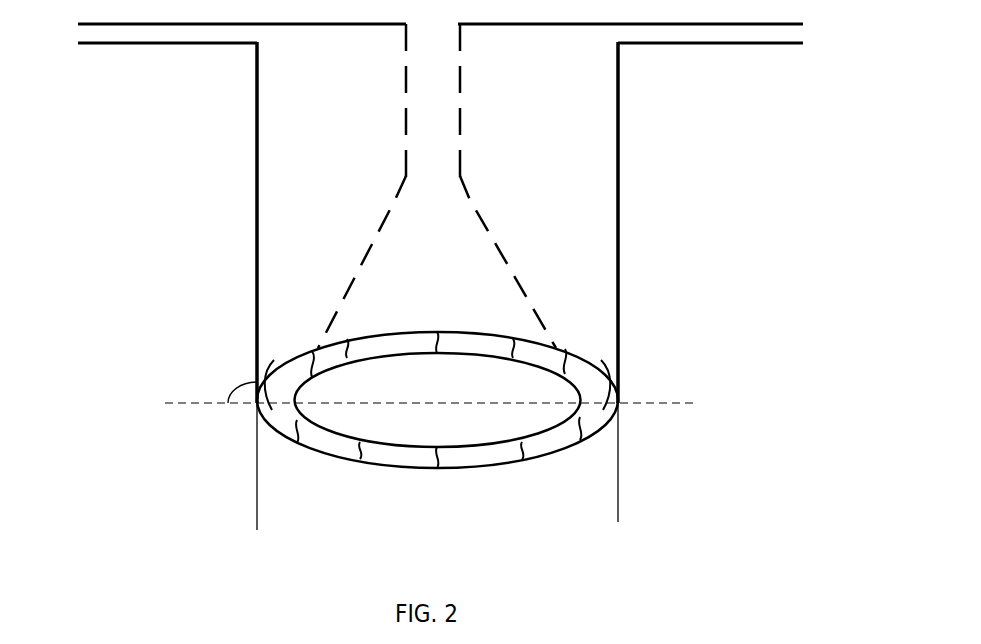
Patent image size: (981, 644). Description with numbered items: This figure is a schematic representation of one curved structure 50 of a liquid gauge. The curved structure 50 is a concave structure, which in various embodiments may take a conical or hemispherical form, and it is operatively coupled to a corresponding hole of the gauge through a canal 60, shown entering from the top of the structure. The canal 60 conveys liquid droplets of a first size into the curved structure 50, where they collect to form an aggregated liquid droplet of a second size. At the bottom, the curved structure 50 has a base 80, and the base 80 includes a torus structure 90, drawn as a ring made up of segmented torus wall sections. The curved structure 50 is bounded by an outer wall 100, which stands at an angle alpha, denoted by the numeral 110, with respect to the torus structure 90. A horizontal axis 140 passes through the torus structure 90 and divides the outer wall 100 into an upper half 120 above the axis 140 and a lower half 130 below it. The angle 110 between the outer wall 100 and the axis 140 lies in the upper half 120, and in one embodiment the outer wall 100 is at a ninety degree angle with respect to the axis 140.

The curved structure 50 is at (328, 305).
The canal 60 is at (440, 124).
The base 80 is at (528, 467).
The torus structure 90 is at (287, 423).
The outer wall 100 is at (250, 198).
The angle 110 is at (221, 392).
The upper half 120 is at (256, 107).
The lower half 130 is at (250, 471).
The axis 140 is at (688, 394).